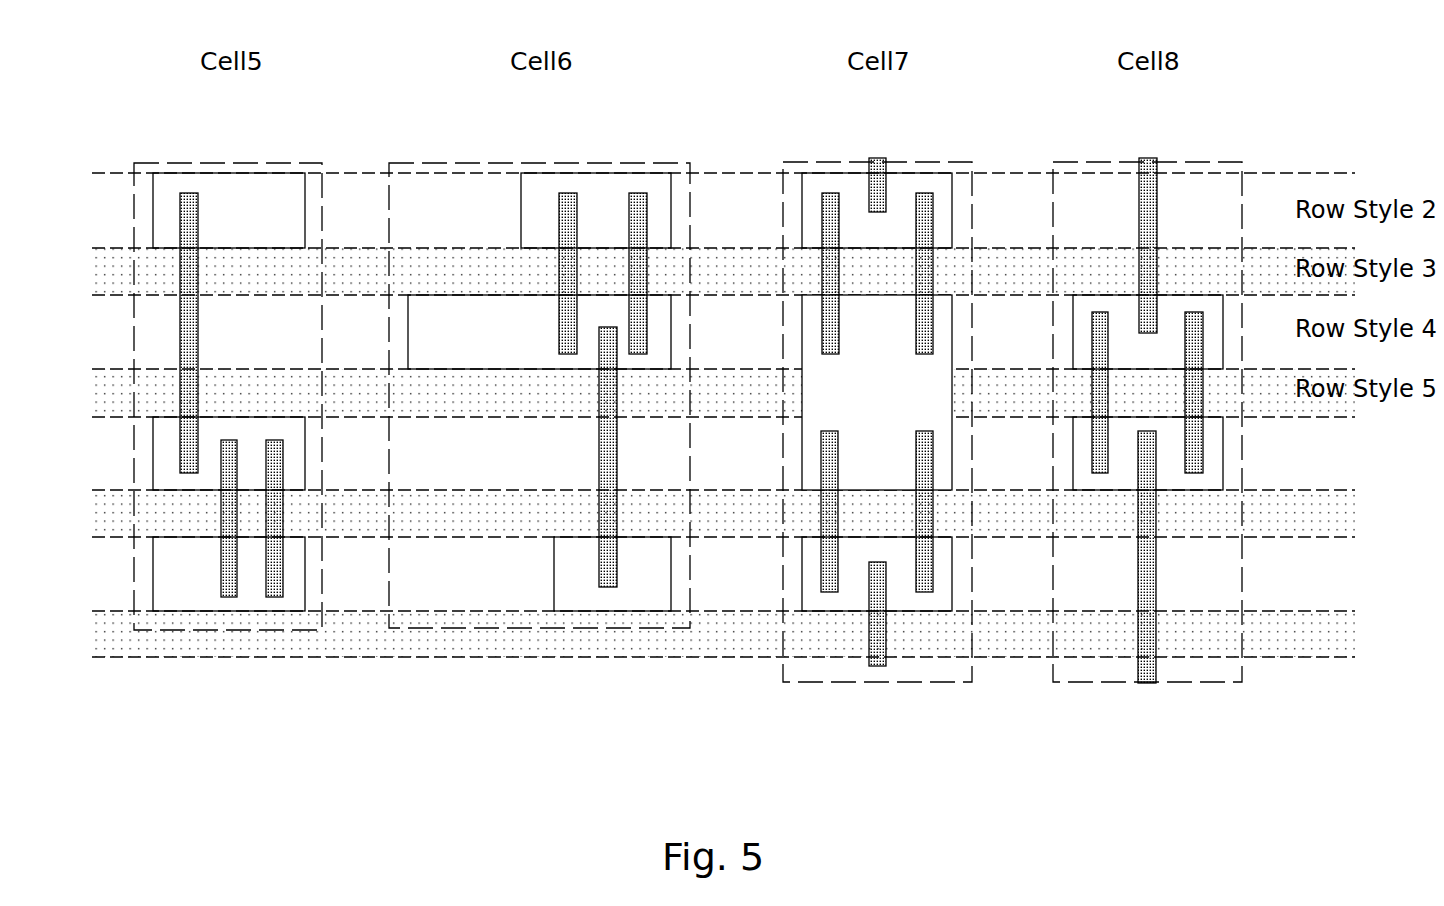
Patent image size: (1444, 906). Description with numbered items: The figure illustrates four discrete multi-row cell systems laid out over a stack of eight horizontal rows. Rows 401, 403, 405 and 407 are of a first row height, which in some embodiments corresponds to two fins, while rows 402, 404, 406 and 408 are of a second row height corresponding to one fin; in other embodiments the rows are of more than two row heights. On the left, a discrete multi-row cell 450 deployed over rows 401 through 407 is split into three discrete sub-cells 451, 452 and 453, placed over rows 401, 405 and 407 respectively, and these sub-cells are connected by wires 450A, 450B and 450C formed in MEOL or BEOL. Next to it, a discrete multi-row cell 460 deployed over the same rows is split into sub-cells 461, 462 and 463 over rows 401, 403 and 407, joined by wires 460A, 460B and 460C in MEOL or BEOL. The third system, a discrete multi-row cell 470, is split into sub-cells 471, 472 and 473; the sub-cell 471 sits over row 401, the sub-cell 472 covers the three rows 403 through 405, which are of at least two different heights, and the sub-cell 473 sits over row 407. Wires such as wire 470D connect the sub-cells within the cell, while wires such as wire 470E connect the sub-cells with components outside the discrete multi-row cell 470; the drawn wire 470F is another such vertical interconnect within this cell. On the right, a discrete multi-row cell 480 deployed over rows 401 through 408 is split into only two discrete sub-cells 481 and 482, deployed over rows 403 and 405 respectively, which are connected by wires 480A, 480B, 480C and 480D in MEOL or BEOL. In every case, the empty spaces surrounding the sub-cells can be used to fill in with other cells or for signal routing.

The row 401 is at (1337, 188).
The row 402 is at (1337, 258).
The row 403 is at (1337, 312).
The row 404 is at (1337, 377).
The row 405 is at (1337, 455).
The row 406 is at (1337, 513).
The row 407 is at (1337, 575).
The row 408 is at (1337, 633).
The discrete multi-row cell 450 is at (275, 163).
The wire 450A is at (188, 193).
The wire 450B is at (227, 597).
The wire 450C is at (273, 597).
The sub-cell 451 is at (153, 207).
The sub-cell 452 is at (153, 447).
The sub-cell 453 is at (153, 572).
The discrete multi-row cell 460 is at (463, 163).
The wire 460A is at (568, 193).
The wire 460B is at (637, 193).
The wire 460C is at (608, 587).
The sub-cell 461 is at (521, 207).
The sub-cell 462 is at (408, 325).
The sub-cell 463 is at (554, 572).
The discrete multi-row cell 470 is at (975, 163).
The wire 470D is at (830, 592).
The wire 470E is at (877, 666).
The conductive line 470F is at (925, 592).
The sub-cell 471 is at (802, 207).
The sub-cell 472 is at (802, 462).
The sub-cell 473 is at (802, 575).
The discrete multi-row cell 480 is at (1063, 163).
The wire 480A is at (1148, 160).
The wire 480B is at (1100, 473).
The wire 480C is at (1147, 683).
The wire 480D is at (1193, 473).
The sub-cell 481 is at (1073, 325).
The sub-cell 482 is at (1073, 462).